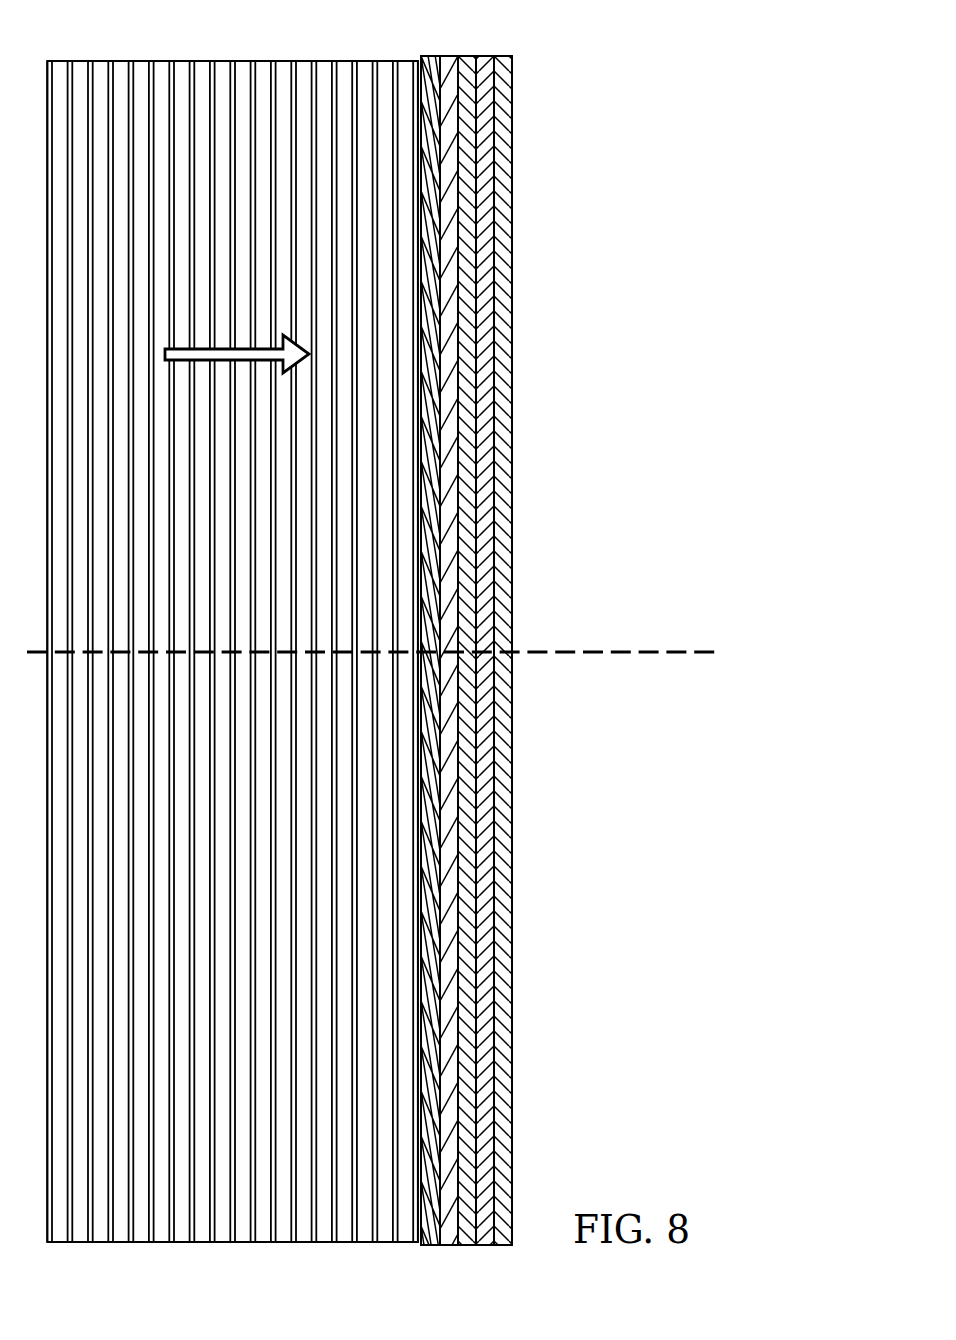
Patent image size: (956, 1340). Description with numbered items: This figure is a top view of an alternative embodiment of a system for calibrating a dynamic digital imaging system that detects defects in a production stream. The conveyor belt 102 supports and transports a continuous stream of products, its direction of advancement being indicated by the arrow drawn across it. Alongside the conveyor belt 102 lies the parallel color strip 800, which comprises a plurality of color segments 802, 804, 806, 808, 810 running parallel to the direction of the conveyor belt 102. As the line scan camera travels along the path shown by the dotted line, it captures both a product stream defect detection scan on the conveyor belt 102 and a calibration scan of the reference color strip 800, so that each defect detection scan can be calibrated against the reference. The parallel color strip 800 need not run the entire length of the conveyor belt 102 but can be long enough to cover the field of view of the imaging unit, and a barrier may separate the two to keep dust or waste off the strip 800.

The conveyor belt 102 is at (203, 60).
The parallel color strip 800 is at (512, 1253).
The color segment 802 is at (430, 318).
The color segment 804 is at (450, 370).
The color segment 806 is at (467, 413).
The color segment 808 is at (483, 457).
The color segment 810 is at (502, 512).